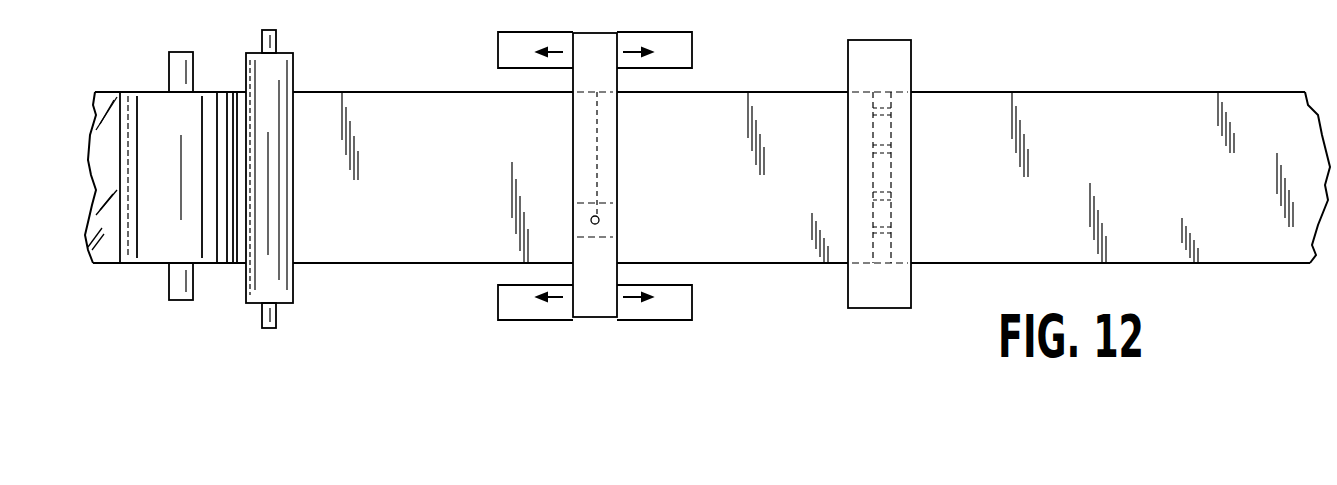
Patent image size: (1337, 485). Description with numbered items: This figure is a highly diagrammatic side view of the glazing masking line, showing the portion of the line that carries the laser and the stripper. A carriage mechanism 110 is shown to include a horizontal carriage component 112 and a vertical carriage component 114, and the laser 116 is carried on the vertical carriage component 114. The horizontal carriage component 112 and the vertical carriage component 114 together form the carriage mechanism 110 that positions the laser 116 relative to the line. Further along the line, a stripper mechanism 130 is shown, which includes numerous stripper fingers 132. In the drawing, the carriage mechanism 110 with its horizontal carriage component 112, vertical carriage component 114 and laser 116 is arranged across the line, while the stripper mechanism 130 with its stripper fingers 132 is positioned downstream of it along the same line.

The carriage mechanism 110 is at (590, 207).
The horizontal carriage component 112 is at (692, 42).
The vertical carriage component 114 is at (607, 270).
The laser 116 is at (599, 220).
The stripper mechanism 130 is at (935, 47).
The stripper fingers 132 is at (891, 150).